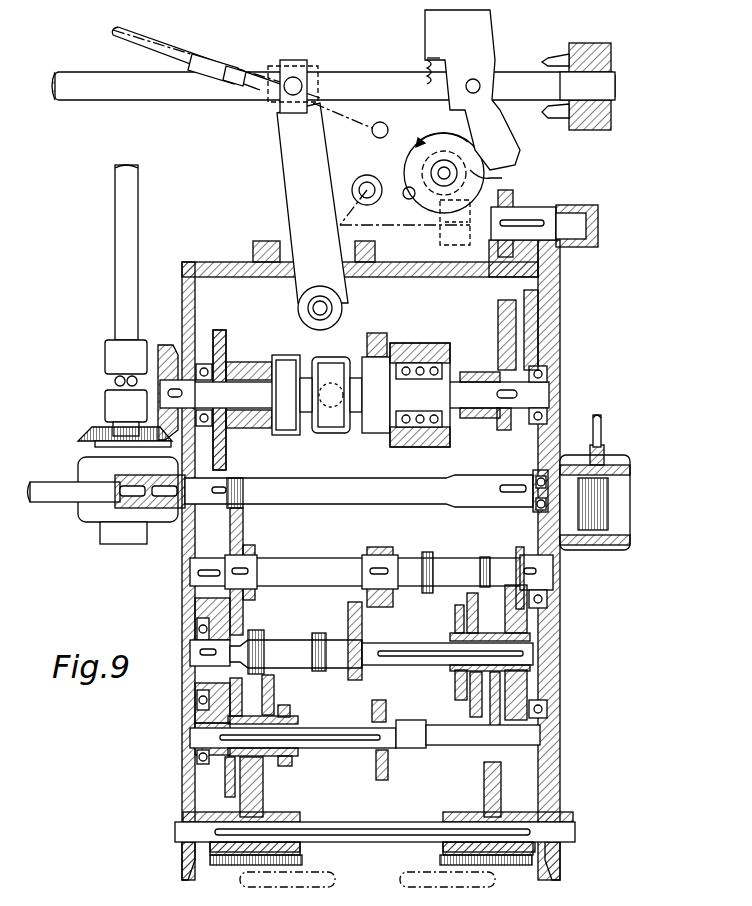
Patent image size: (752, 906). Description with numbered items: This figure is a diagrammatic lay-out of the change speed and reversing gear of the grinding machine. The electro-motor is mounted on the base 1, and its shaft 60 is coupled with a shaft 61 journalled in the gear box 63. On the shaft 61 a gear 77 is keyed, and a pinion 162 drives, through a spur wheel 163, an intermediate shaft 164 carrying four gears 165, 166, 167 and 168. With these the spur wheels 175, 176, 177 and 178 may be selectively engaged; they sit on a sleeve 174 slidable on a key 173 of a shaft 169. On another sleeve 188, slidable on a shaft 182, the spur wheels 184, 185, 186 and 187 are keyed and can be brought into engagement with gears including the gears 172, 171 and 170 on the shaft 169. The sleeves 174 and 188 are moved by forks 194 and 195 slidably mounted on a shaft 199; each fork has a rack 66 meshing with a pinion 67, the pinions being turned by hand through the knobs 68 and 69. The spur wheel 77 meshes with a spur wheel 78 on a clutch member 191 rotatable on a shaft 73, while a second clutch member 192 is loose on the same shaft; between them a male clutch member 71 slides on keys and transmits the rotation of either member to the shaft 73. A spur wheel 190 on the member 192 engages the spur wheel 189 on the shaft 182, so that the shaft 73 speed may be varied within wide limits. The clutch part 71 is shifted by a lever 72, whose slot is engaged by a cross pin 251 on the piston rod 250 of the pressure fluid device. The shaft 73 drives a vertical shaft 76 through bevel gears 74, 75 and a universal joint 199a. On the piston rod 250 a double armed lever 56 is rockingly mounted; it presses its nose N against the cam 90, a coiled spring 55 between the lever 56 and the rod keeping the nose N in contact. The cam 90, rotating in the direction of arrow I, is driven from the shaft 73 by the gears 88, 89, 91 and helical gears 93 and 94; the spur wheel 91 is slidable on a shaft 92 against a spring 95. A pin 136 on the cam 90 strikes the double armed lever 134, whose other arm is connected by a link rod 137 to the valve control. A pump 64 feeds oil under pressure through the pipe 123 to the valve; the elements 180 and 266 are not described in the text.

The base 1 is at (612, 55).
The coiled spring 55 is at (430, 65).
The double armed lever 56 is at (430, 29).
The shaft 60 is at (48, 496).
The shaft 61 is at (400, 494).
The gear box 63 is at (182, 795).
The pump 64 is at (598, 540).
The rack 66 is at (228, 866).
The pinion 67 is at (302, 858).
The knob 68 is at (335, 879).
The knob 69 is at (418, 887).
The male clutch member 71 is at (345, 432).
The lever 72 is at (292, 202).
The shaft 73 is at (244, 388).
The bevel gear 74 is at (167, 348).
The bevel gear 75 is at (84, 434).
The vertical shaft 76 is at (117, 249).
The gear 77 is at (230, 465).
The spur wheel 78 is at (230, 443).
The gear 88 is at (503, 430).
The gear 89 is at (505, 338).
The cam 90 is at (422, 142).
The spur wheel 91 is at (514, 205).
The shaft 92 is at (586, 219).
The helical gear 93 is at (456, 245).
The helical gear 94 is at (445, 235).
The spring 95 is at (545, 206).
The pipe 123 is at (603, 428).
The double armed lever 134 is at (360, 172).
The pin 136 is at (409, 200).
The link rod 137 is at (144, 41).
The pinion 162 is at (244, 497).
The spur wheel 163 is at (246, 530).
The intermediate shaft 164 is at (334, 570).
The gear 165 is at (520, 547).
The gear 166 is at (485, 559).
The gear 167 is at (428, 555).
The gear 168 is at (386, 548).
The shaft 169 is at (416, 664).
The gear 170 is at (352, 609).
The gear 171 is at (318, 635).
The gear 172 is at (256, 630).
The key 173 is at (388, 655).
The sleeve 174 is at (456, 675).
The spur wheel 175 is at (530, 609).
The spur wheel 176 is at (510, 689).
The spur wheel 177 is at (470, 597).
The spur wheel 178 is at (456, 617).
The bearing boss 180 is at (210, 612).
The shaft 182 is at (356, 750).
The spur wheel 184 is at (215, 729).
The spur wheel 185 is at (210, 699).
The spur wheel 186 is at (274, 687).
The spur wheel 187 is at (292, 709).
The sleeve 188 is at (290, 758).
The spur wheel 189 is at (388, 767).
The spur wheel 190 is at (376, 335).
The clutch member 191 is at (278, 362).
The clutch member 192 is at (424, 345).
The fork 194 is at (486, 775).
The fork 195 is at (264, 789).
The shaft 199 is at (375, 820).
The universal joint 199a is at (108, 380).
The piston rod 250 is at (144, 93).
The cross pin 251 is at (293, 77).
The pin 266 is at (555, 55).
The nose N is at (502, 177).
The arrow I is at (408, 154).